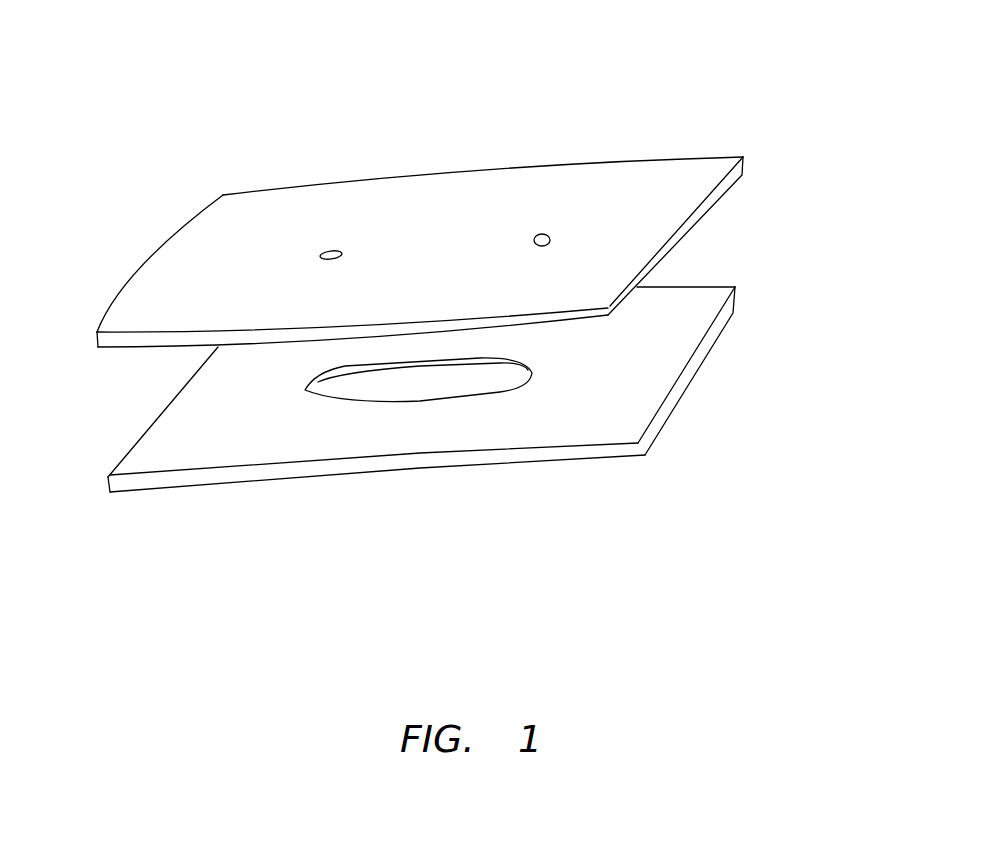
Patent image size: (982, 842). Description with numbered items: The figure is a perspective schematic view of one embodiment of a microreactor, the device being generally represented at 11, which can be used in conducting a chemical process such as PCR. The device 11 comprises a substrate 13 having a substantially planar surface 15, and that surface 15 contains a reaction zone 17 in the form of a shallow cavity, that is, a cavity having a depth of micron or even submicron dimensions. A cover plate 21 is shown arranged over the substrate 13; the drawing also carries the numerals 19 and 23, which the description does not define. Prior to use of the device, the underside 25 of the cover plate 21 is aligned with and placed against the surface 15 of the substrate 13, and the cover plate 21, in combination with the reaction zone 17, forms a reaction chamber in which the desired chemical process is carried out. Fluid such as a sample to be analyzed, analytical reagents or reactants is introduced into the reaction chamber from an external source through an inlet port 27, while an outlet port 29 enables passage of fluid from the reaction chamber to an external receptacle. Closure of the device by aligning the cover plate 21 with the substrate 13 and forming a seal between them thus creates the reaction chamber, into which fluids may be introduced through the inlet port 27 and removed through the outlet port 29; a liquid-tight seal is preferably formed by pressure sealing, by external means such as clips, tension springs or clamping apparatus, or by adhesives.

The microreactor device 11 is at (817, 112).
The substrate 13 is at (444, 389).
The planar surface 15 is at (633, 397).
The reaction zone 17 is at (348, 388).
The bottom plate edge 19 is at (330, 372).
The cover plate 21 is at (479, 204).
The top plate upper surface 23 is at (625, 185).
The underside 25 is at (690, 228).
The inlet port 27 is at (328, 250).
The outlet port 29 is at (540, 226).